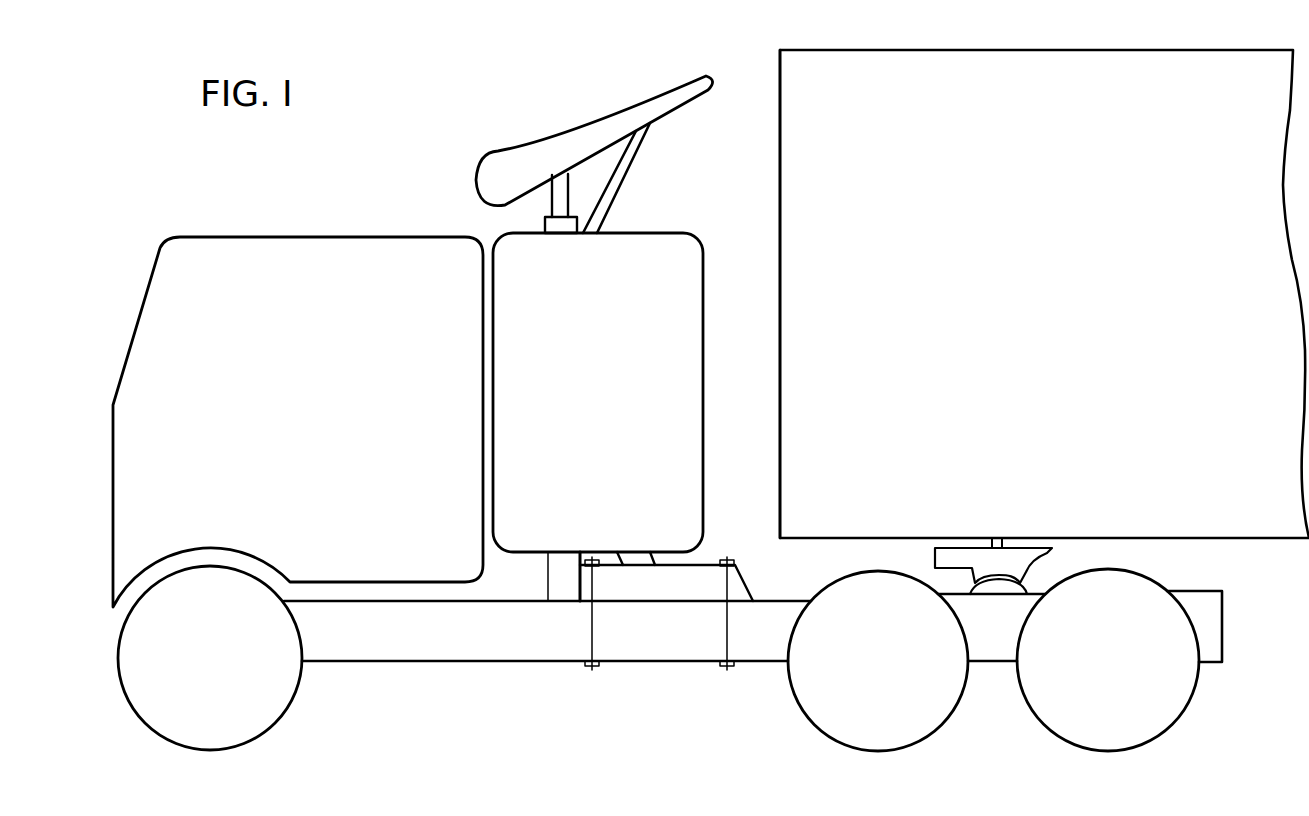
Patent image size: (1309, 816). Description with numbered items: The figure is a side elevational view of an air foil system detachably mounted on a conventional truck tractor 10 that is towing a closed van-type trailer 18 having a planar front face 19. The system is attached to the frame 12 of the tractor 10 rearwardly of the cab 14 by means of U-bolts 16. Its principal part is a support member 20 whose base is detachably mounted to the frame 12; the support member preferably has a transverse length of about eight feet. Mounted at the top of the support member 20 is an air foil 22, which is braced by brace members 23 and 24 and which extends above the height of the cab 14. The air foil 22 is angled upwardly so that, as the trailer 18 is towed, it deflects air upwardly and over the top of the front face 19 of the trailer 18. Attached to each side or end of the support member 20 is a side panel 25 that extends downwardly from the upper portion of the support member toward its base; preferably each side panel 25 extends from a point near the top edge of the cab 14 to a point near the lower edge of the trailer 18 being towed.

The truck tractor 10 is at (323, 210).
The frame 12 is at (508, 648).
The cab 14 is at (347, 245).
The U-bolts 16 is at (722, 665).
The van-type trailer 18 is at (980, 63).
The front face 19 is at (778, 97).
The support member 20 is at (551, 572).
The air foil 22 is at (555, 138).
The brace member 23 is at (552, 203).
The brace member 24 is at (628, 170).
The side panel 25 is at (680, 312).